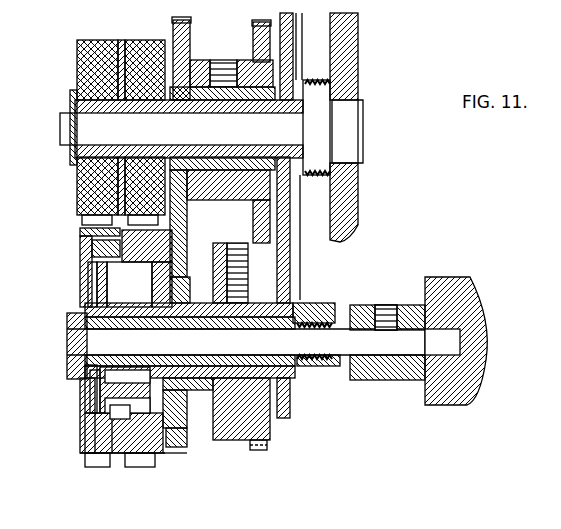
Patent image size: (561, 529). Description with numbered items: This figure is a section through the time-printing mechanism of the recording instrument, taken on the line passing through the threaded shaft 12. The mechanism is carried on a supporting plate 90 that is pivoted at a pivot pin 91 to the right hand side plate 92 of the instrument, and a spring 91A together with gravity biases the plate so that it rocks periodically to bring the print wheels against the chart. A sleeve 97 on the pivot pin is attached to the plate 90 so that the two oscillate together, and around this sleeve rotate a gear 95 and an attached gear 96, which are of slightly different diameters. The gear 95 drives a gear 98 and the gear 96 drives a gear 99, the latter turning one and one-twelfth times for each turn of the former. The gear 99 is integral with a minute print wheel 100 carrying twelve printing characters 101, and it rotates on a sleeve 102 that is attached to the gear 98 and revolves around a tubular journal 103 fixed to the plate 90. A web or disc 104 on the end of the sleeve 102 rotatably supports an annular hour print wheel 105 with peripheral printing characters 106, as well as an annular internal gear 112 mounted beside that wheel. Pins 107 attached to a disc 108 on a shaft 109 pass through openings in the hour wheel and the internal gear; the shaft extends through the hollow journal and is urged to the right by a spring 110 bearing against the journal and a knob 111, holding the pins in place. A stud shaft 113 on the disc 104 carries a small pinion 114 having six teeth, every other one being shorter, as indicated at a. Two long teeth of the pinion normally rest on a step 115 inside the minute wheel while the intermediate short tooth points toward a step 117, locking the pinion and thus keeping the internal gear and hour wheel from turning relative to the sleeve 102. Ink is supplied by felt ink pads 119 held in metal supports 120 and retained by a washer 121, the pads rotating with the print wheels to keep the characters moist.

The threaded shaft 12 is at (153, 8).
The felt ink pads 119 is at (118, 40).
The metal supports 120 is at (77, 72).
The washer 121 is at (72, 100).
The sleeve 97 is at (87, 120).
The gear 96 is at (190, 36).
The gear 95 is at (253, 27).
The spring 91A is at (315, 80).
The right hand side plate 92 is at (350, 60).
The pivot pin 91 is at (358, 145).
The pins 107 is at (80, 232).
The disc 108 is at (80, 252).
The web or disc 104 is at (85, 290).
The step 117 is at (128, 283).
The step 115 is at (177, 275).
The supporting plate 90 is at (284, 250).
The sleeve 102 is at (297, 306).
The spring 110 is at (345, 312).
The shaft 109 is at (68, 340).
The pinion 114 is at (88, 376).
The stud shaft 113 is at (96, 396).
The short tooth a is at (108, 418).
The hour print wheel 105 is at (92, 440).
The printing characters 106 is at (90, 460).
The annular internal gear 112 is at (100, 465).
The printing characters 101 is at (160, 455).
The minute print wheel 100 is at (178, 447).
The gear 99 is at (208, 435).
The gear 98 is at (265, 450).
The tubular journal 103 is at (303, 382).
The knob 111 is at (430, 405).